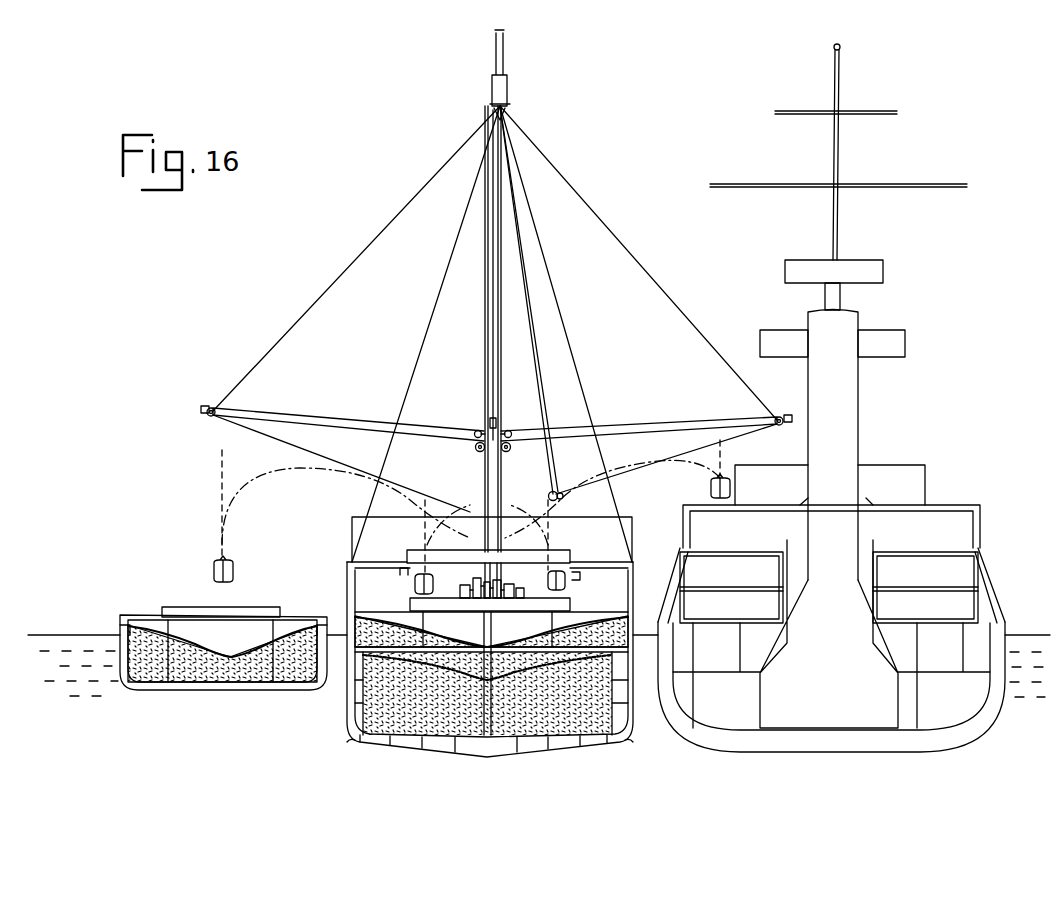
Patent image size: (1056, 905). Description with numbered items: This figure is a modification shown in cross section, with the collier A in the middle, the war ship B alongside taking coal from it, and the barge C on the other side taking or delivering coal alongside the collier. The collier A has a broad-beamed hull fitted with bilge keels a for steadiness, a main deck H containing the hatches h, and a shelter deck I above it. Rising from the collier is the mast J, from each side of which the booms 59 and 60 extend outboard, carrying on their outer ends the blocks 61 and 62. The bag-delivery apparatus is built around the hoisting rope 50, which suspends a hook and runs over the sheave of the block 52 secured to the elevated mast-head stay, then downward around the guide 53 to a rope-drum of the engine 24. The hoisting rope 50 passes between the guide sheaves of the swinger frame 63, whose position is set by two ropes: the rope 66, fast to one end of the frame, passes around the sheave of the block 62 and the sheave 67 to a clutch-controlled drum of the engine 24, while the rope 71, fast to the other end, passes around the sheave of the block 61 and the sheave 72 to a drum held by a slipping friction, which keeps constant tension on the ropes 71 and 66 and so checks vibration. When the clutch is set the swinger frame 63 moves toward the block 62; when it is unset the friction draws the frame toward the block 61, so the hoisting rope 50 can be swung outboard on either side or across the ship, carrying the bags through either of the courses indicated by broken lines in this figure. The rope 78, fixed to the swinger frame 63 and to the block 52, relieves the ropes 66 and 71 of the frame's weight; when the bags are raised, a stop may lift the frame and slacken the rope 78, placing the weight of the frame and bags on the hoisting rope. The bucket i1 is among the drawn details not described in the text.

The block 52 is at (504, 112).
The mast J is at (493, 300).
The hoisting rope 50 is at (540, 387).
The rope 78 is at (528, 404).
The boom 59 is at (323, 418).
The boom 60 is at (645, 426).
The block 61 is at (208, 418).
The block 62 is at (781, 427).
The sheave 72 is at (476, 432).
The guide 53 is at (482, 452).
The sheave 67 is at (507, 452).
The rope 71 is at (423, 490).
The rope 66 is at (612, 478).
The swinger frame 63 is at (557, 491).
The engine 24 is at (508, 585).
The shelter deck I is at (397, 557).
The hatches h is at (568, 608).
The main deck H is at (396, 604).
The bucket i1 is at (566, 560).
The collier A is at (497, 746).
The bilge keels a is at (347, 742).
The war ship B is at (876, 746).
The barge C is at (243, 687).